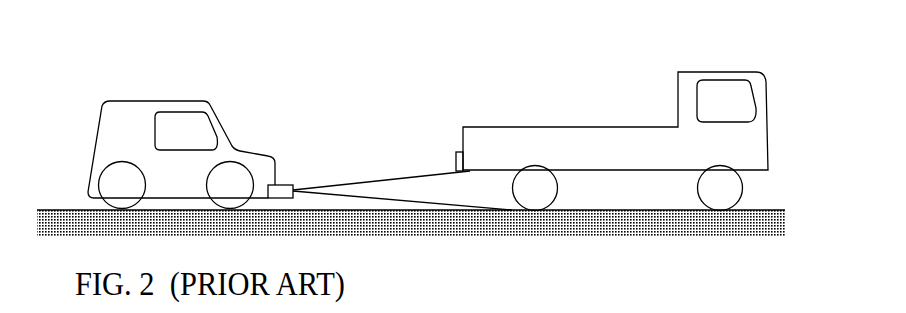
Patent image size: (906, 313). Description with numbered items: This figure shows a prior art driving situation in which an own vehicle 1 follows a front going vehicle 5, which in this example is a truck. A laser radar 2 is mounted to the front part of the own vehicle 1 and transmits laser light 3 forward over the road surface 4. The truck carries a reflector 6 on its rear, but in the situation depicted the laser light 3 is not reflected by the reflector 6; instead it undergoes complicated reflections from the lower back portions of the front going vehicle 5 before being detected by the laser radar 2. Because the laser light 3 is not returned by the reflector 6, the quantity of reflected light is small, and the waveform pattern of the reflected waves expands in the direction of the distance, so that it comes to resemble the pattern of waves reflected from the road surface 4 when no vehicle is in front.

The own vehicle 1 is at (167, 100).
The laser radar 2 is at (292, 183).
The laser light 3 is at (357, 183).
The road surface 4 is at (513, 211).
The front going vehicle 5 is at (703, 70).
The reflector 6 is at (456, 149).